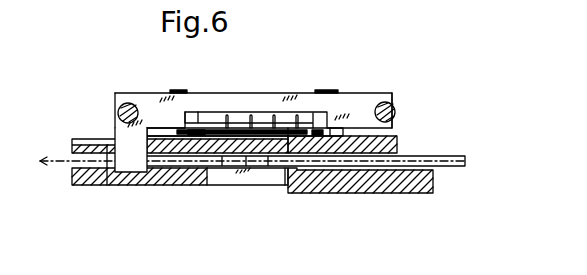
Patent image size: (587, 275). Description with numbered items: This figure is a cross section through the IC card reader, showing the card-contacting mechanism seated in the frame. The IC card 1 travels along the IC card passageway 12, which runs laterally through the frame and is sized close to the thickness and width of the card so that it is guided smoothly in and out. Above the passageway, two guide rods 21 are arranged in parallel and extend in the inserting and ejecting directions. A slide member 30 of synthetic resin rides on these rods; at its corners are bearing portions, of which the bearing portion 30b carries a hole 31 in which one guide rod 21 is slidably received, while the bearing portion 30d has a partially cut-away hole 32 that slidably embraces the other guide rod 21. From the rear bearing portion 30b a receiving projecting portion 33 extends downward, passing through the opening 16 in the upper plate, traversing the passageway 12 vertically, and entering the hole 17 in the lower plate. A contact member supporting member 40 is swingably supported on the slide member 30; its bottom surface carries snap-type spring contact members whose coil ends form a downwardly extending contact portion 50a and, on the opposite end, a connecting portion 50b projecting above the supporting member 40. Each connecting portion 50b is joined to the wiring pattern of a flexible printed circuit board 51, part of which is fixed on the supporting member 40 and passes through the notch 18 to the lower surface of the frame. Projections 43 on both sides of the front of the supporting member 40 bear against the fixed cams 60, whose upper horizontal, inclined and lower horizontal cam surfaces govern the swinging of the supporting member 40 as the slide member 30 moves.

The IC card 1 is at (437, 156).
The IC card passageway 12 is at (177, 166).
The opening 16 is at (100, 137).
The hole 17 is at (117, 187).
The notch 18 is at (229, 175).
The guide rods 21 is at (126, 102).
The slide member 30 is at (266, 93).
The bearing portion 30b is at (116, 92).
The bearing portion 30d is at (385, 92).
The hole 31 is at (119, 108).
The hole 32 is at (391, 106).
The receiving projecting portion 33 is at (135, 160).
The contact member supporting member 40 is at (262, 140).
The projections 43 is at (193, 136).
The contact portion 50a is at (278, 137).
The connecting portion 50b is at (226, 123).
The flexible printed circuit board 51 is at (305, 130).
The fixed cams 60 is at (180, 90).